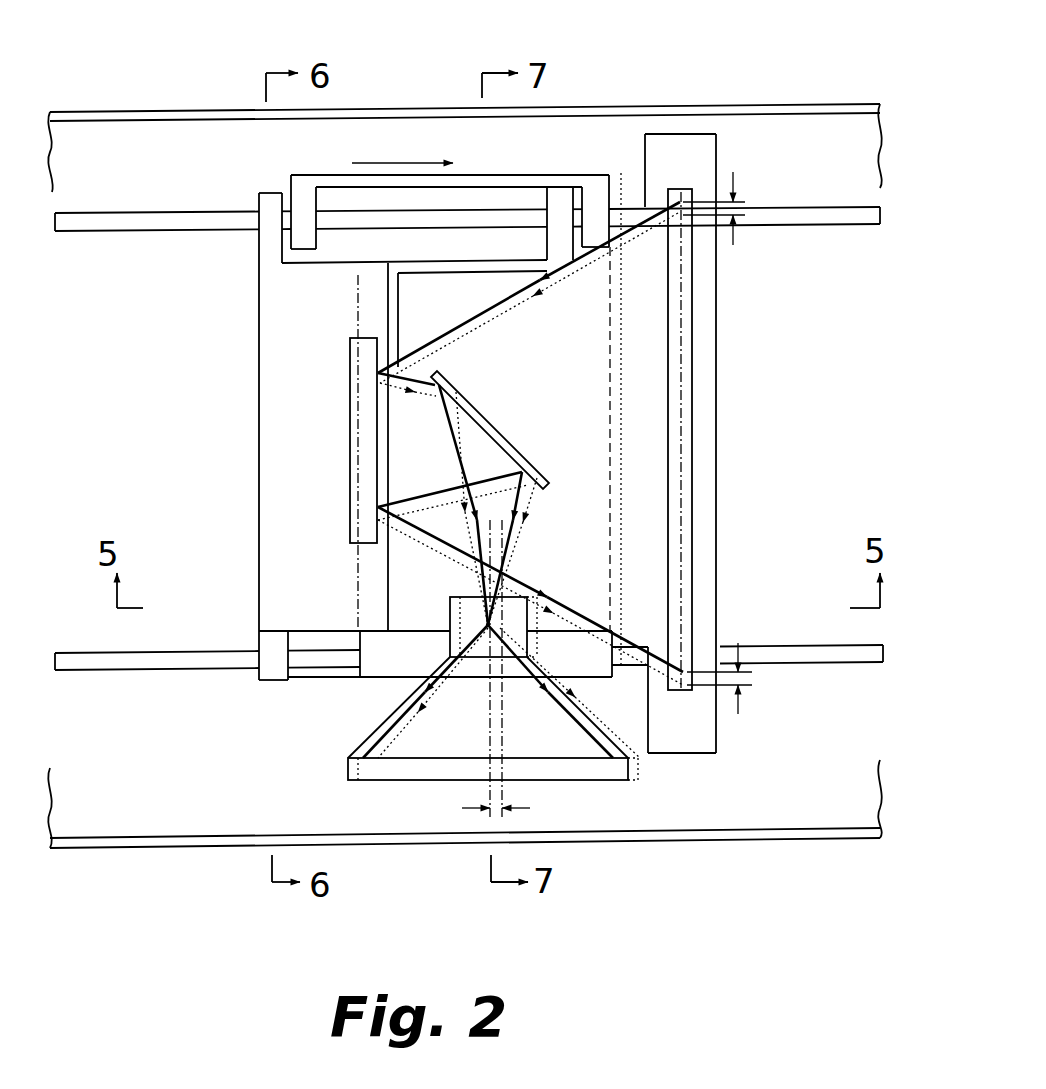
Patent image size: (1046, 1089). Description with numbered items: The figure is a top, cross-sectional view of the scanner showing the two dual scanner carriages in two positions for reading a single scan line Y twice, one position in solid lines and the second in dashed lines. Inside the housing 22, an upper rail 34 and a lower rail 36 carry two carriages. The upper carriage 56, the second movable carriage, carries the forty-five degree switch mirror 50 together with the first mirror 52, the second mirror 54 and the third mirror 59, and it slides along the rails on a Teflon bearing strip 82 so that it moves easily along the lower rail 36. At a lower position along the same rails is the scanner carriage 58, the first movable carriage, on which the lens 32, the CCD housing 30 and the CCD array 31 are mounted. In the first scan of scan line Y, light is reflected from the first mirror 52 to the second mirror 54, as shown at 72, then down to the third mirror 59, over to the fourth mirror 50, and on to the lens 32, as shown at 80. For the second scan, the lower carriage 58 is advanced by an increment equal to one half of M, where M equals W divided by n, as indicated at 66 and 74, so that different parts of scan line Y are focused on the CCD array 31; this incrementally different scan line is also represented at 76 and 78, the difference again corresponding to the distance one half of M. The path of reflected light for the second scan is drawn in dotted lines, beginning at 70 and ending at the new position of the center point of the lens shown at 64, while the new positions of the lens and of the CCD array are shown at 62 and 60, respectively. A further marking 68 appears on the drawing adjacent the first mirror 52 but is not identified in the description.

The housing 22 is at (128, 110).
The CCD housing 30 is at (288, 786).
The CCD array 31 is at (583, 768).
The lens 32 is at (518, 618).
The upper rail 34 is at (822, 215).
The lower rail 36 is at (818, 652).
The switch mirror 50 is at (478, 420).
The first mirror 52 is at (697, 385).
The second mirror 54 is at (370, 460).
The upper carriage 56 is at (417, 290).
The scanner carriage 58 is at (477, 178).
The third mirror 59 is at (329, 452).
The new position of CCD array 60 is at (644, 767).
The new position of lens 62 is at (537, 642).
The new position of lens center point 64 is at (503, 617).
The incremental advance 66 is at (622, 173).
The detector surface 68 is at (692, 458).
The start of second-scan light path 70 is at (631, 243).
The light path from first mirror to second mirror 72 is at (433, 340).
The incremental advance 74 is at (497, 818).
The incrementally different scan line 76 is at (745, 205).
The incrementally different scan line 78 is at (750, 678).
The light path to lens 80 is at (487, 625).
The Teflon bearing strip 82 is at (420, 163).